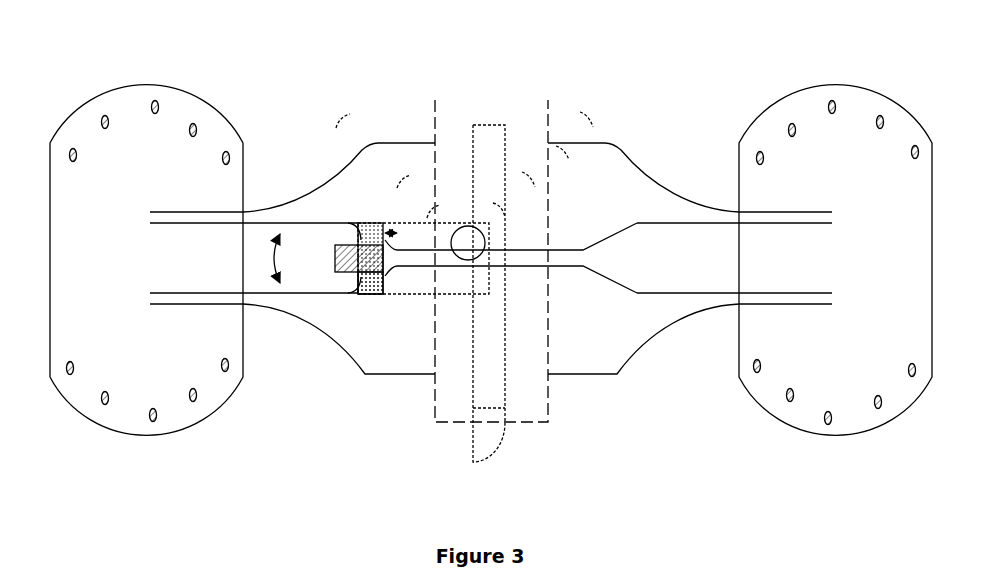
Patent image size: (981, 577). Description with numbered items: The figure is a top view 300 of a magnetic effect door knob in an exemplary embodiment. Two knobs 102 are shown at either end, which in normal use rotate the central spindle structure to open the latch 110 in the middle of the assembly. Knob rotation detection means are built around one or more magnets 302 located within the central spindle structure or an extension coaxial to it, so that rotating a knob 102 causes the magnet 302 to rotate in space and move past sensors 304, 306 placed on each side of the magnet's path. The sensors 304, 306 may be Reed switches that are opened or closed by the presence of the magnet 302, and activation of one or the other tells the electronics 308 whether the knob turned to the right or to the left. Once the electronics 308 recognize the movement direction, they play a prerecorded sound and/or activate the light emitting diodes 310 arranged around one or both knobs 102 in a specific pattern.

The top view 300 is at (473, 257).
The knob 102 is at (170, 148).
The latch 110 is at (494, 447).
The magnet 302 is at (341, 247).
The sensor 304 is at (385, 295).
The sensor 306 is at (372, 223).
The electronics 308 is at (448, 230).
The light emitting diodes 310 is at (67, 350).